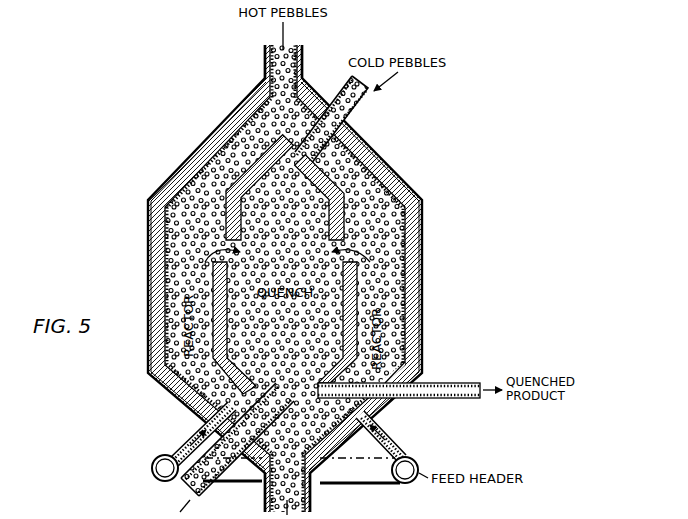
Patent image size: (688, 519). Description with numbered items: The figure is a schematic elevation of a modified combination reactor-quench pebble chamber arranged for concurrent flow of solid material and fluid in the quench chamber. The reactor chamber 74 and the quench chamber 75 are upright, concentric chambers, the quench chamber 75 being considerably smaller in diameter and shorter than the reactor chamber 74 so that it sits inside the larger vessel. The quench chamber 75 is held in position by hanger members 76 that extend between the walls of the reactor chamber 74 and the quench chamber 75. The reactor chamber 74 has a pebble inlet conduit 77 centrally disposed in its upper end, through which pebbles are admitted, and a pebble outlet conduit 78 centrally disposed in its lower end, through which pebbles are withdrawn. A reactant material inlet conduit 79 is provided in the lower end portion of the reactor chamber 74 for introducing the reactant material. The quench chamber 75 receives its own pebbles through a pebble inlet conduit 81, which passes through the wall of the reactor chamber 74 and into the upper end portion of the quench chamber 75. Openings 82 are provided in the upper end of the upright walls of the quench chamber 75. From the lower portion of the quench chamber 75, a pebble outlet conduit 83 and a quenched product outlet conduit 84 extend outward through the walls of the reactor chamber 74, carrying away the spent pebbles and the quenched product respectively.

The reactor chamber 74 is at (423, 272).
The quench chamber 75 is at (357, 297).
The hanger members 76 is at (332, 189).
The pebble inlet conduit 77 is at (266, 78).
The pebble outlet conduit 78 is at (312, 506).
The reactant material inlet conduit 79 is at (180, 452).
The pebble inlet conduit 81 is at (367, 110).
The openings 82 is at (238, 245).
The pebble outlet conduit 83 is at (203, 498).
The quenched product outlet conduit 84 is at (444, 383).